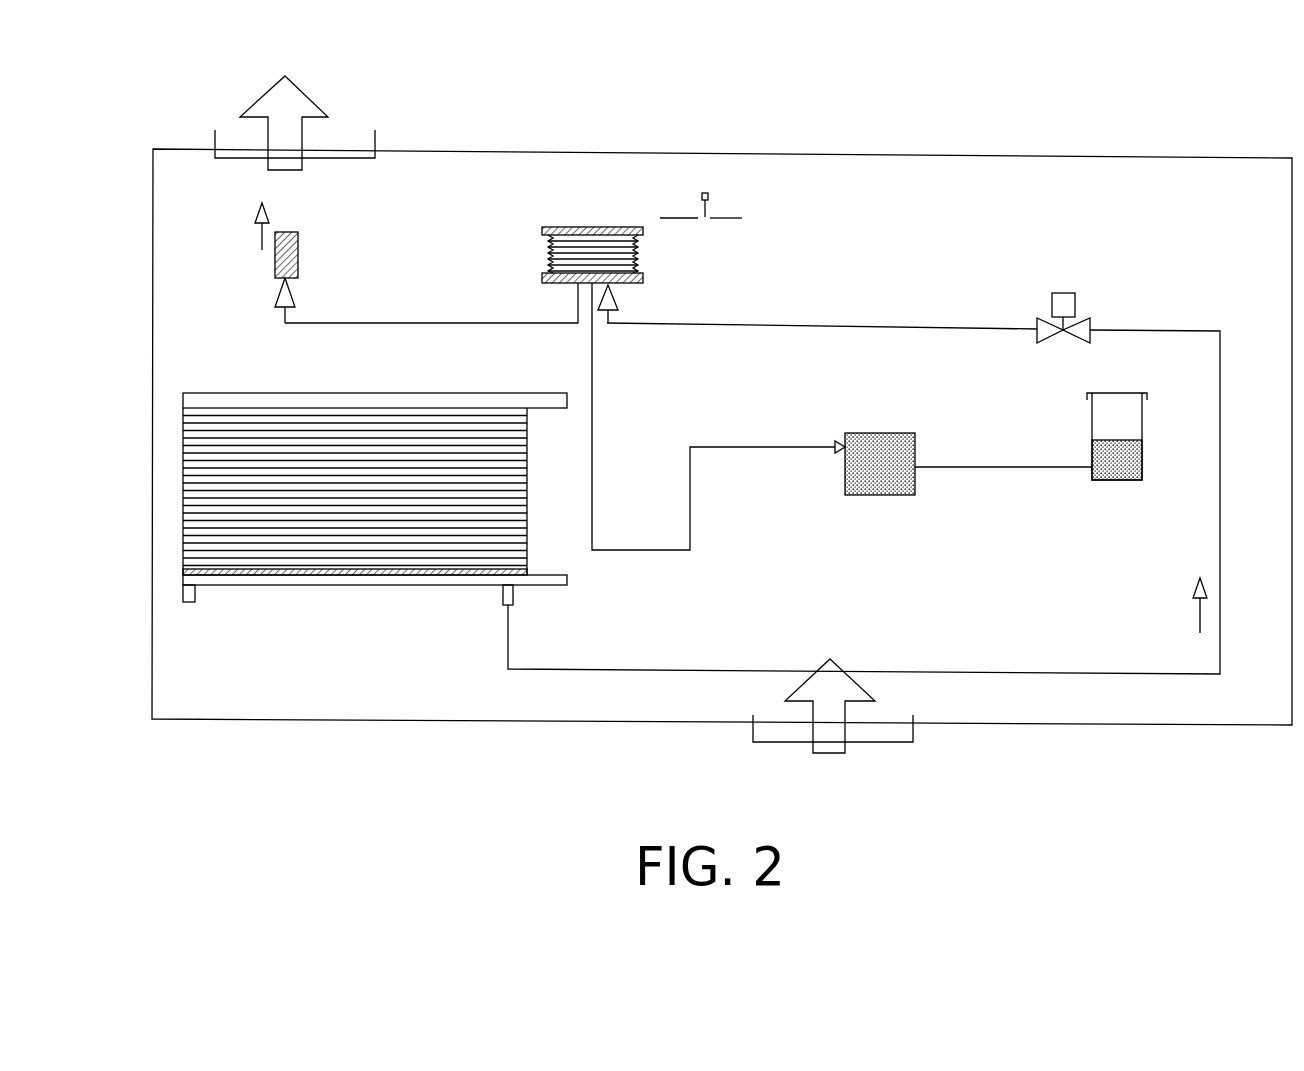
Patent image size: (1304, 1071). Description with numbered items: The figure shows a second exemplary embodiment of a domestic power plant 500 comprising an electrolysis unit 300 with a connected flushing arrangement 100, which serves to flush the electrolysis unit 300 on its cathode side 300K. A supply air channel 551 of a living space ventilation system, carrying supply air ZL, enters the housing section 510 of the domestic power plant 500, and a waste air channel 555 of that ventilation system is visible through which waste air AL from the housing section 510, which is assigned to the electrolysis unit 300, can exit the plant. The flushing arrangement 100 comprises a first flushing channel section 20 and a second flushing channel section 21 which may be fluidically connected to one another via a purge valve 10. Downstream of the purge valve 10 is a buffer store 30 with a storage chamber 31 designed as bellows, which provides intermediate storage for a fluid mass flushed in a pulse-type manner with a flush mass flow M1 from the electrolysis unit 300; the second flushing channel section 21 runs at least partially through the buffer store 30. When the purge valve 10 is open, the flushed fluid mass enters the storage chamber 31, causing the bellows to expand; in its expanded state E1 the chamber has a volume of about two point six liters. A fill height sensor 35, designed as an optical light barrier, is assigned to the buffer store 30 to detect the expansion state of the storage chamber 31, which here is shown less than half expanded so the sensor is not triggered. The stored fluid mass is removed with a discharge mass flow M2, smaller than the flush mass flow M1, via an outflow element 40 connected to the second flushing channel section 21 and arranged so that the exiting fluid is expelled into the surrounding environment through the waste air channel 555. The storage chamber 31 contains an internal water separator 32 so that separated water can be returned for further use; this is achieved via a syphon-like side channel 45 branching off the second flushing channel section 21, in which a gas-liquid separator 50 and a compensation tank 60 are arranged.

The purge valve 10 is at (1088, 318).
The first flushing channel section 20 is at (1088, 677).
The second flushing channel section 21 is at (415, 323).
The buffer store 30 is at (638, 190).
The storage chamber 31 is at (552, 252).
The water separator 32 is at (623, 283).
The fill height sensor 35 is at (722, 190).
The outflow element 40 is at (300, 245).
The side channel 45 is at (642, 550).
The gas-liquid separator 50 is at (880, 470).
The compensation tank 60 is at (1142, 438).
The flushing arrangement 100 is at (1062, 195).
The electrolysis unit 300 is at (183, 502).
The cathode side 300K is at (363, 582).
The domestic power plant 500 is at (222, 760).
The housing section 510 is at (150, 678).
The supply air channel 551 is at (770, 743).
The waste air channel 555 is at (377, 143).
The waste air AL is at (273, 97).
The supply air ZL is at (838, 692).
The flush mass flow M1 is at (1185, 605).
The discharge mass flow M2 is at (283, 217).
The expanded state E1 is at (765, 249).